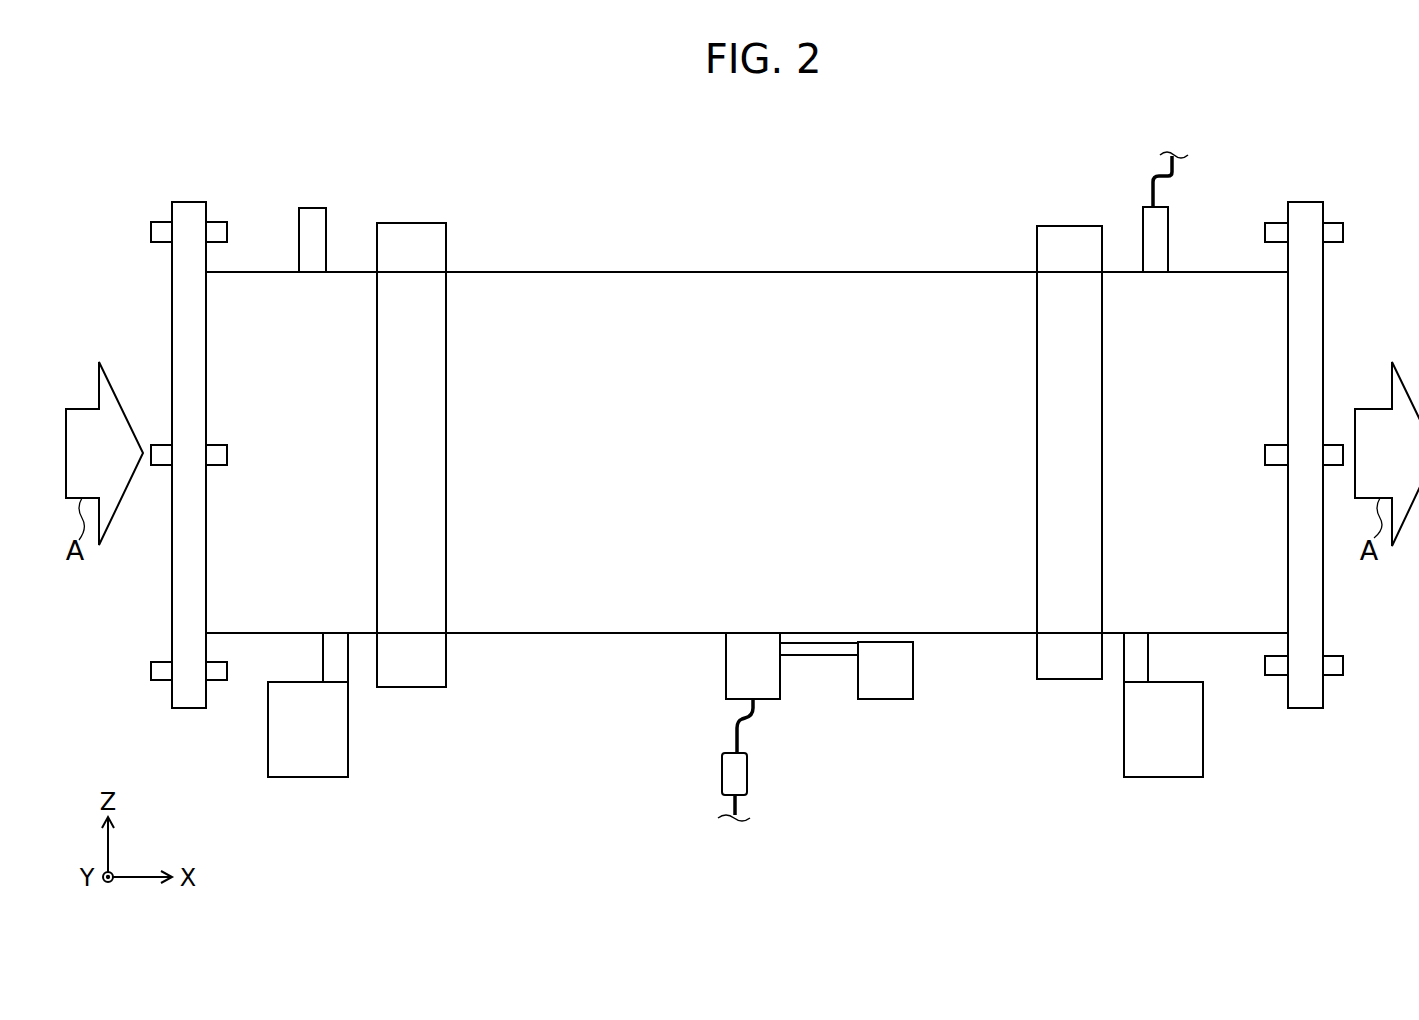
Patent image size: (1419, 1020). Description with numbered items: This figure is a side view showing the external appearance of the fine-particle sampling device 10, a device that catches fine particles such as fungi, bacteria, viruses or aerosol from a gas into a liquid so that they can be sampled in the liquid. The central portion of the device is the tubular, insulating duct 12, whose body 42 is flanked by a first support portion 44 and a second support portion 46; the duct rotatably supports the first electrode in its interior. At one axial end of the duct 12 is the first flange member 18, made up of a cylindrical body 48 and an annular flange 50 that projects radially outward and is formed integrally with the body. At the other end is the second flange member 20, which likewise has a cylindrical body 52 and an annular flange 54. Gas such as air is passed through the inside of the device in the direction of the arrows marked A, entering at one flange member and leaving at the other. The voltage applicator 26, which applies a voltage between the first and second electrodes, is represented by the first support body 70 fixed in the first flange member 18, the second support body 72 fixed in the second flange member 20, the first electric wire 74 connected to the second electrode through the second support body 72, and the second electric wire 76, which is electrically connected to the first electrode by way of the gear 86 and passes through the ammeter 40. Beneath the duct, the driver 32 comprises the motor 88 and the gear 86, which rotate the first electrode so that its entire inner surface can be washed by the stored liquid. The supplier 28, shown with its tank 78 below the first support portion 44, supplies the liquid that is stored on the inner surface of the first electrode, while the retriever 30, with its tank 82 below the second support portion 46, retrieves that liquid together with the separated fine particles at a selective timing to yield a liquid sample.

The fine-particle sampling device 10 is at (72, 131).
The duct 12 is at (765, 270).
The first flange member 18 is at (266, 270).
The second flange member 20 is at (1238, 270).
The voltage applicator 26 is at (1138, 187).
The supplier 28 is at (361, 502).
The retriever 30 is at (1112, 503).
The driver 32 is at (789, 728).
The ammeter 40 is at (735, 777).
The body 42 is at (634, 302).
The first support portion 44 is at (410, 255).
The second support portion 46 is at (1067, 257).
The body 48 is at (348, 300).
The flange 50 is at (188, 222).
The body 52 is at (1193, 302).
The flange 54 is at (1305, 222).
The first support body 70 is at (312, 222).
The second support body 72 is at (1152, 252).
The first electric wire 74 is at (1152, 178).
The second electric wire 76 is at (730, 733).
The tank 78 is at (309, 750).
The tank 82 is at (1166, 751).
The gear 86 is at (762, 682).
The motor 88 is at (885, 682).